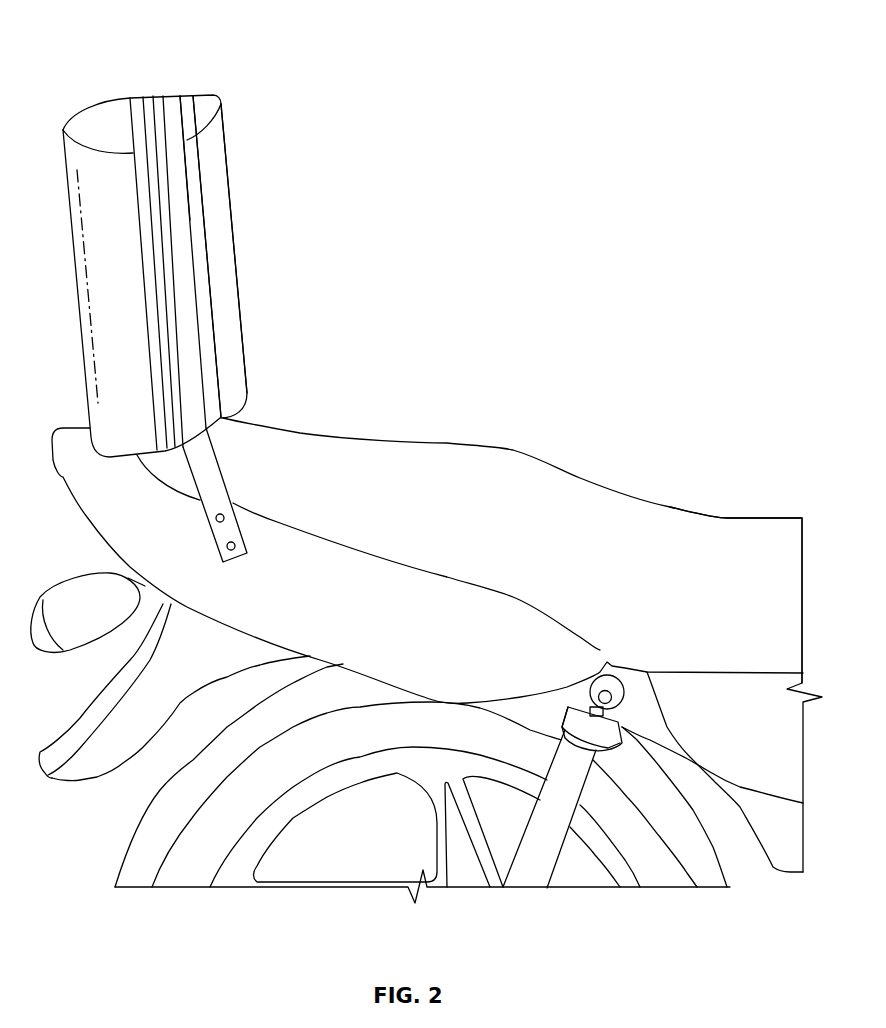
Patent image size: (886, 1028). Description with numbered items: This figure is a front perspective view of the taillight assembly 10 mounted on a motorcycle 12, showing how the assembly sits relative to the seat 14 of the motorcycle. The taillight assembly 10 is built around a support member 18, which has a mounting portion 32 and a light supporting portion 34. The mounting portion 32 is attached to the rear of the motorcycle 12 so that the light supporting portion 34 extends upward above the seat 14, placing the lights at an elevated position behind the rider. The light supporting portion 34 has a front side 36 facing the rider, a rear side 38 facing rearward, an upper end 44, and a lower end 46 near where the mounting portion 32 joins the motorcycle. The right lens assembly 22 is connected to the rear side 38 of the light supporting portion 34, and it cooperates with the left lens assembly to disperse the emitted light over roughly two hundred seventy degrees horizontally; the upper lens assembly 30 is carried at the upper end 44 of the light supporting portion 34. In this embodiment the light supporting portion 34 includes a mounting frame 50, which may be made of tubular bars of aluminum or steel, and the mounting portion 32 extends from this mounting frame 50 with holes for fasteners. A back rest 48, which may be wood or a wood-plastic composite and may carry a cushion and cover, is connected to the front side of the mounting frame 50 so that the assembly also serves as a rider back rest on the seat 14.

The taillight assembly 10 is at (155, 301).
The motorcycle 12 is at (437, 645).
The seat 14 is at (672, 508).
The support member 18 is at (200, 290).
The right lens assembly 22 is at (85, 375).
The upper lens assembly 30 is at (63, 130).
The mounting portion 32 is at (222, 478).
The light supporting portion 34 is at (183, 142).
The front side 36 is at (208, 212).
The rear side 38 is at (143, 297).
The upper end 44 is at (177, 95).
The lower end 46 is at (167, 453).
The back rest 48 is at (226, 162).
The mounting frame 50 is at (162, 95).